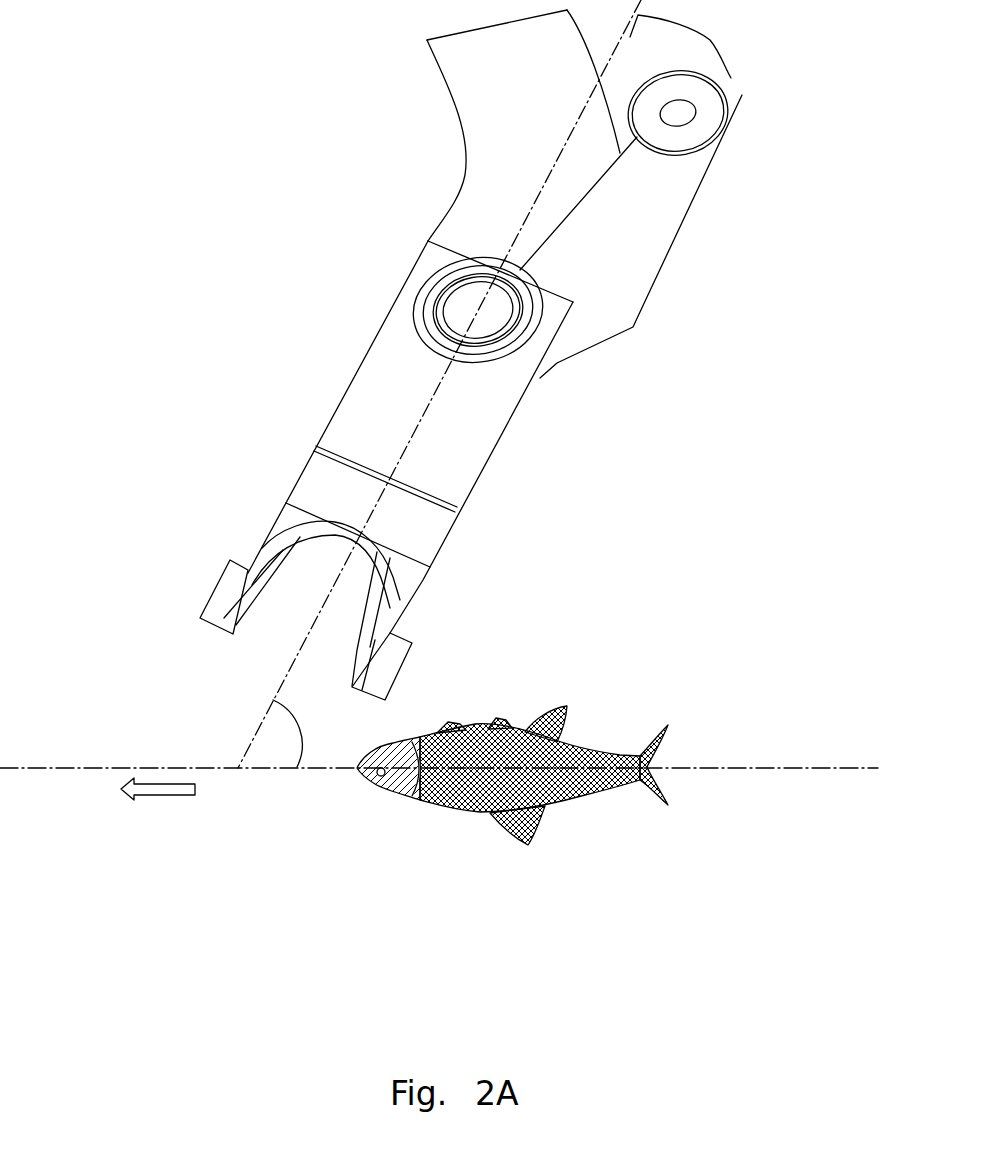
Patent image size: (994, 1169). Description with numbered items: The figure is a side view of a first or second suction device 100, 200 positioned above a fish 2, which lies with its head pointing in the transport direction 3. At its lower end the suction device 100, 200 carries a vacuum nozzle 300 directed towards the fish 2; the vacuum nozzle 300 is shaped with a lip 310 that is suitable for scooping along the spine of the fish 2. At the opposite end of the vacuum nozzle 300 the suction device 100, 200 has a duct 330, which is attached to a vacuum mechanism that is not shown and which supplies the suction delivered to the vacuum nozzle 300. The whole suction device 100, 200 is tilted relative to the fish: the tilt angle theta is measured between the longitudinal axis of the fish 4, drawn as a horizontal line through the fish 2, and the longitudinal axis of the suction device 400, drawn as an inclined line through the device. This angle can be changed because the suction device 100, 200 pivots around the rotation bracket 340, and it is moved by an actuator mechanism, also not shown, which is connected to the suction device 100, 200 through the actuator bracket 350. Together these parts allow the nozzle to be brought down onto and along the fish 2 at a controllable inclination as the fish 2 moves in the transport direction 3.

The first suction device 100 is at (236, 290).
The second suction device 200 is at (482, 384).
The vacuum nozzle 300 is at (272, 570).
The lip 310 is at (363, 687).
The duct 330 is at (422, 62).
The rotation bracket 340 is at (493, 327).
The actuator bracket 350 is at (679, 114).
The longitudinal axis of the suction device 400 is at (731, 78).
The fish 2 is at (523, 740).
The transport direction 3 is at (153, 792).
The longitudinal axis of the fish 4 is at (703, 767).